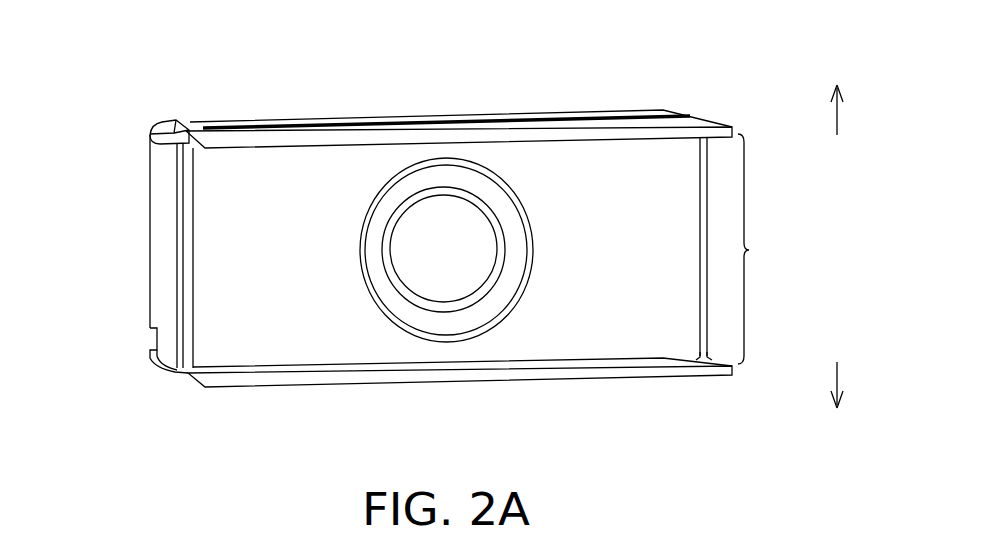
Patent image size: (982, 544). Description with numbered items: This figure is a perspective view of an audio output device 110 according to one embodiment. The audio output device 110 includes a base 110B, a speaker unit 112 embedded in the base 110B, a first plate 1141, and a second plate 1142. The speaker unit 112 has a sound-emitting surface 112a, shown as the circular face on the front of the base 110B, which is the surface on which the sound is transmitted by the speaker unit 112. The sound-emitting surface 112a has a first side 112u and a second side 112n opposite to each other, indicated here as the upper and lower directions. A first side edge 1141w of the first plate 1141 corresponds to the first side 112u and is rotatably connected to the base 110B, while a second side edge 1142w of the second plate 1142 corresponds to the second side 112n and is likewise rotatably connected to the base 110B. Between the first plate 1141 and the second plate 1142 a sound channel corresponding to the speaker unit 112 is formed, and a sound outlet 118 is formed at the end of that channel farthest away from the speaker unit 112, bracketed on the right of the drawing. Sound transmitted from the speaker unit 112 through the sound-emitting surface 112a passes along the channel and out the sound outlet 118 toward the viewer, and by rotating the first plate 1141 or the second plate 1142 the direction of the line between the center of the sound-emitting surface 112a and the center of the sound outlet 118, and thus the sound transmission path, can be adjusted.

The audio output device 110 is at (132, 30).
The base 110B is at (240, 182).
The speaker unit 112 is at (535, 251).
The sound-emitting surface 112a is at (438, 252).
The first plate 1141 is at (704, 124).
The second plate 1142 is at (707, 370).
The first side edge 1141w is at (156, 125).
The second side edge 1142w is at (182, 375).
The sound outlet 118 is at (764, 249).
The first side 112u is at (837, 95).
The second side 112n is at (836, 401).